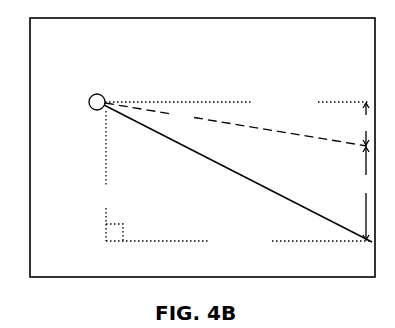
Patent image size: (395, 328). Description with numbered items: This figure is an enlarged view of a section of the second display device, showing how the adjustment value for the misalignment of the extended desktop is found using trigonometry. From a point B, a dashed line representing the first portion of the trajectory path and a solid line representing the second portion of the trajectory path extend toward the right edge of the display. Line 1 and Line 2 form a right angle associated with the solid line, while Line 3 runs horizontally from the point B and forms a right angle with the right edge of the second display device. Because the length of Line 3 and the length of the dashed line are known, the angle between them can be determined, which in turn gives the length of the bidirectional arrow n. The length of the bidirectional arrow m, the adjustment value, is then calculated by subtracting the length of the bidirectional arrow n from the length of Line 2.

The point B is at (97, 91).
The element Line 1 is at (238, 241).
The element Line 2 is at (106, 176).
The element Line 3 is at (237, 102).
The bidirectional arrow n is at (365, 124).
The bidirectional arrow m is at (366, 193).